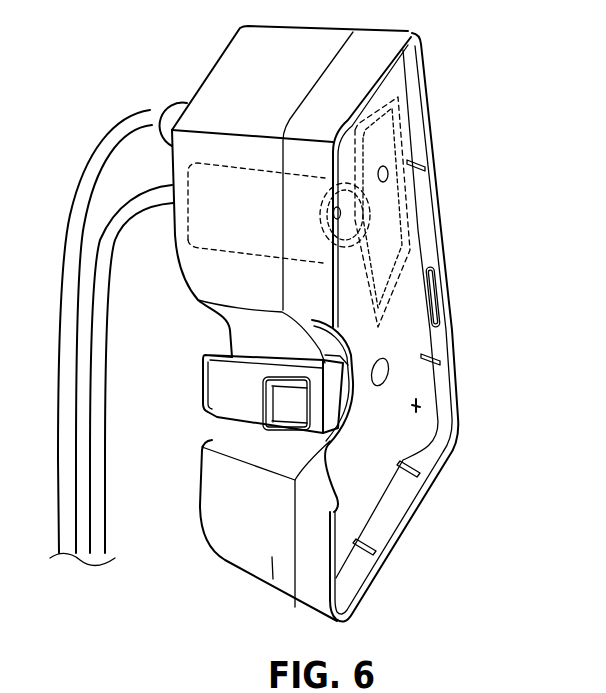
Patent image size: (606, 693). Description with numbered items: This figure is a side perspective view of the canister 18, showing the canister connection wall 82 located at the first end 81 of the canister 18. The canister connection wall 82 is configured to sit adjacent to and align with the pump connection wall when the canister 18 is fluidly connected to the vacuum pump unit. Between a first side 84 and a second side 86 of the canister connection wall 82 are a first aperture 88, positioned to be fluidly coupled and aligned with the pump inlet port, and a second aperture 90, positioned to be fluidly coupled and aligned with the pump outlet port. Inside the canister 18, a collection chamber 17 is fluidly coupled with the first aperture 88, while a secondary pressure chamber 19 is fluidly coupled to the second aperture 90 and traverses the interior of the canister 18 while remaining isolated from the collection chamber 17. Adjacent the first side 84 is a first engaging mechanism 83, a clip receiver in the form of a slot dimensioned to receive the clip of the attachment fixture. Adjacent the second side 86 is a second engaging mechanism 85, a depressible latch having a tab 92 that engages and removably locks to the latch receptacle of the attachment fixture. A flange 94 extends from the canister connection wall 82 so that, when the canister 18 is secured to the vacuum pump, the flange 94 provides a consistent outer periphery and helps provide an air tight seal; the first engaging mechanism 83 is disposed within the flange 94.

The collection chamber 17 is at (233, 511).
The canister 18 is at (195, 60).
The secondary pressure chamber 19 is at (222, 227).
The first end 81 is at (443, 307).
The canister connection wall 82 is at (370, 472).
The first engaging mechanism 83 is at (178, 258).
The first side 84 is at (418, 213).
The second engaging mechanism 85 is at (247, 418).
The second side 86 is at (300, 300).
The first aperture 88 is at (390, 177).
The second aperture 90 is at (341, 214).
The tab 92 is at (283, 400).
The flange 94 is at (328, 190).